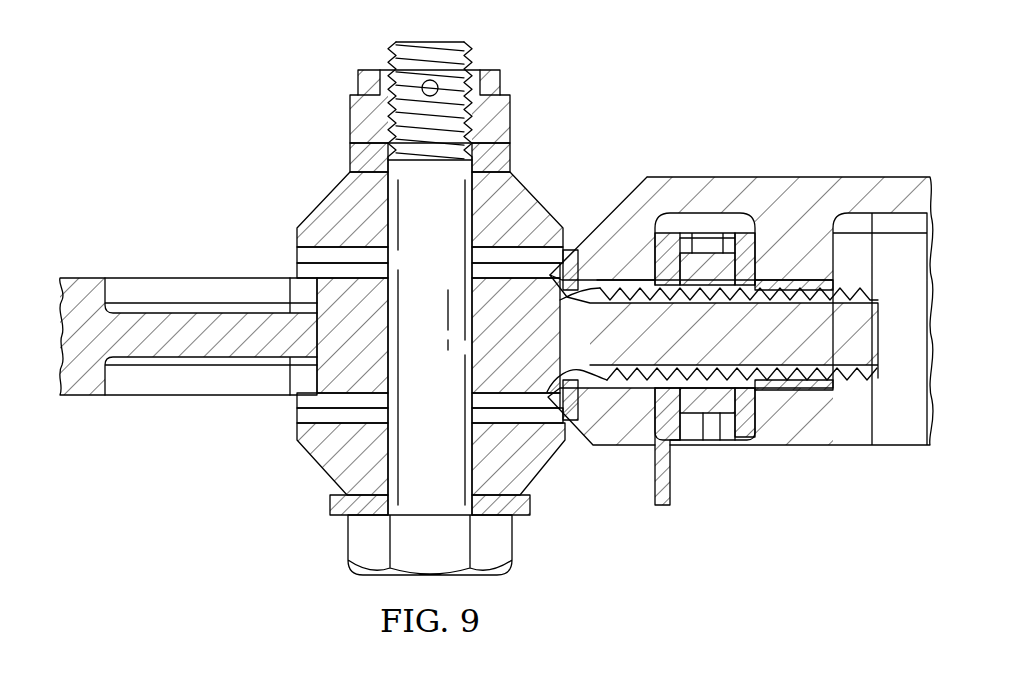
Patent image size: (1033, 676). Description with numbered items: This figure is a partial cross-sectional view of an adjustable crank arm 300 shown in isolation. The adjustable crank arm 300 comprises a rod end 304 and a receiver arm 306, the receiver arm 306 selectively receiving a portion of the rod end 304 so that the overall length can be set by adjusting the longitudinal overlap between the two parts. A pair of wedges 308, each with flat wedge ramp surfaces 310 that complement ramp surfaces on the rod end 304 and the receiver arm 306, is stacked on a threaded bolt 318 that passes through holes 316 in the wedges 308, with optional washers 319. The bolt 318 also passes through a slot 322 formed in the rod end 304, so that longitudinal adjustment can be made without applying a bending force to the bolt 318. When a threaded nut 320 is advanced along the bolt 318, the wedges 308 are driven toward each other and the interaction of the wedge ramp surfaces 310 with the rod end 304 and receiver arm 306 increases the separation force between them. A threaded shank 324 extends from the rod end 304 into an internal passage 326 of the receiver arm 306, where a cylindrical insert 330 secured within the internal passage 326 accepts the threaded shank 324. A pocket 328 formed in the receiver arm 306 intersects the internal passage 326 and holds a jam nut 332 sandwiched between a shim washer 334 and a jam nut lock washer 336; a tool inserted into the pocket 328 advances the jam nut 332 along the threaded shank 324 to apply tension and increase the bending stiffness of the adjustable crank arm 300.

The adjustable crank arm 300 is at (770, 70).
The rod end 304 is at (82, 272).
The receiver arm 306 is at (875, 172).
The wedges 308 is at (342, 195).
The wedge ramp surfaces 310 is at (303, 262).
The holes 316 is at (398, 212).
The threaded bolt 318 is at (458, 352).
The washers 319 is at (508, 158).
The threaded nut 320 is at (352, 108).
The slot 322 is at (375, 326).
The threaded shank 324 is at (880, 340).
The internal passage 326 is at (622, 283).
The pocket 328 is at (705, 222).
The cylindrical insert 330 is at (800, 287).
The jam nut 332 is at (705, 418).
The shim washer 334 is at (748, 420).
The jam nut lock washer 336 is at (662, 507).